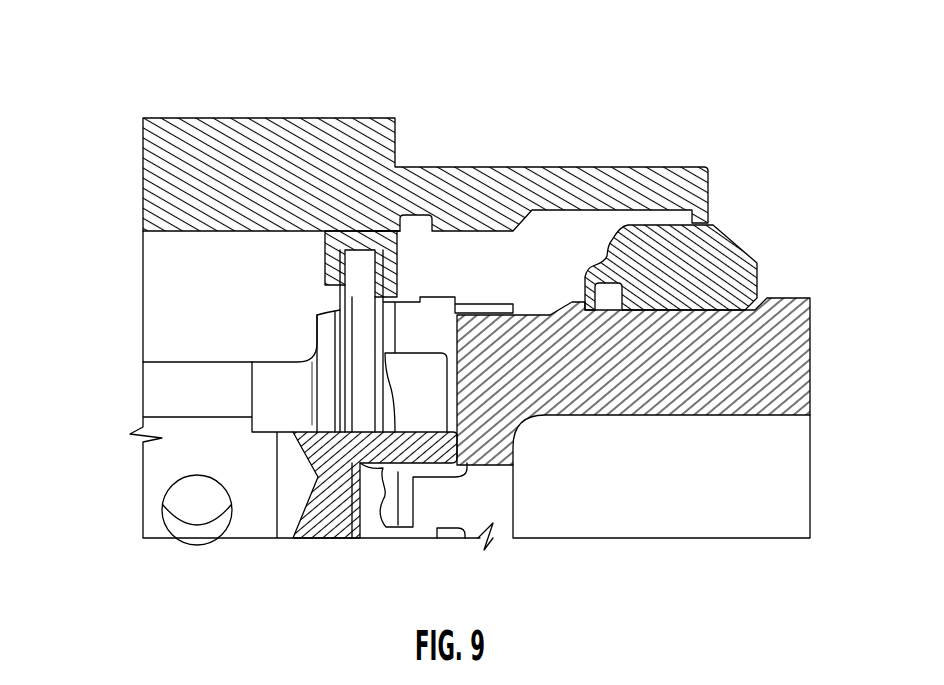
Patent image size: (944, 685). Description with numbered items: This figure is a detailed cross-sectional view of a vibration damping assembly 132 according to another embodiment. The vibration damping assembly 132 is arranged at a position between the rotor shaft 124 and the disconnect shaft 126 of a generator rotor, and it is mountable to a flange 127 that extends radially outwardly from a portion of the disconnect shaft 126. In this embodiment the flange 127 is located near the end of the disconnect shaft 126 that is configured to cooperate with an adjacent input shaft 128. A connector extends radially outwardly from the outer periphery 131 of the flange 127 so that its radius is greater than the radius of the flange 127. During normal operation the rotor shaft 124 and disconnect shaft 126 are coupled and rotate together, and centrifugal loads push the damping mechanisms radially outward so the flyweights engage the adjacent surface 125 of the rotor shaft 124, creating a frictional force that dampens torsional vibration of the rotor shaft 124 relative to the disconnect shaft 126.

The rotor shaft 124 is at (213, 142).
The adjacent surface 125 is at (290, 232).
The disconnect shaft 126 is at (182, 368).
The flange 127 is at (365, 305).
The input shaft 128 is at (780, 338).
The outer periphery 131 is at (363, 243).
The vibration damping assembly 132 is at (372, 232).